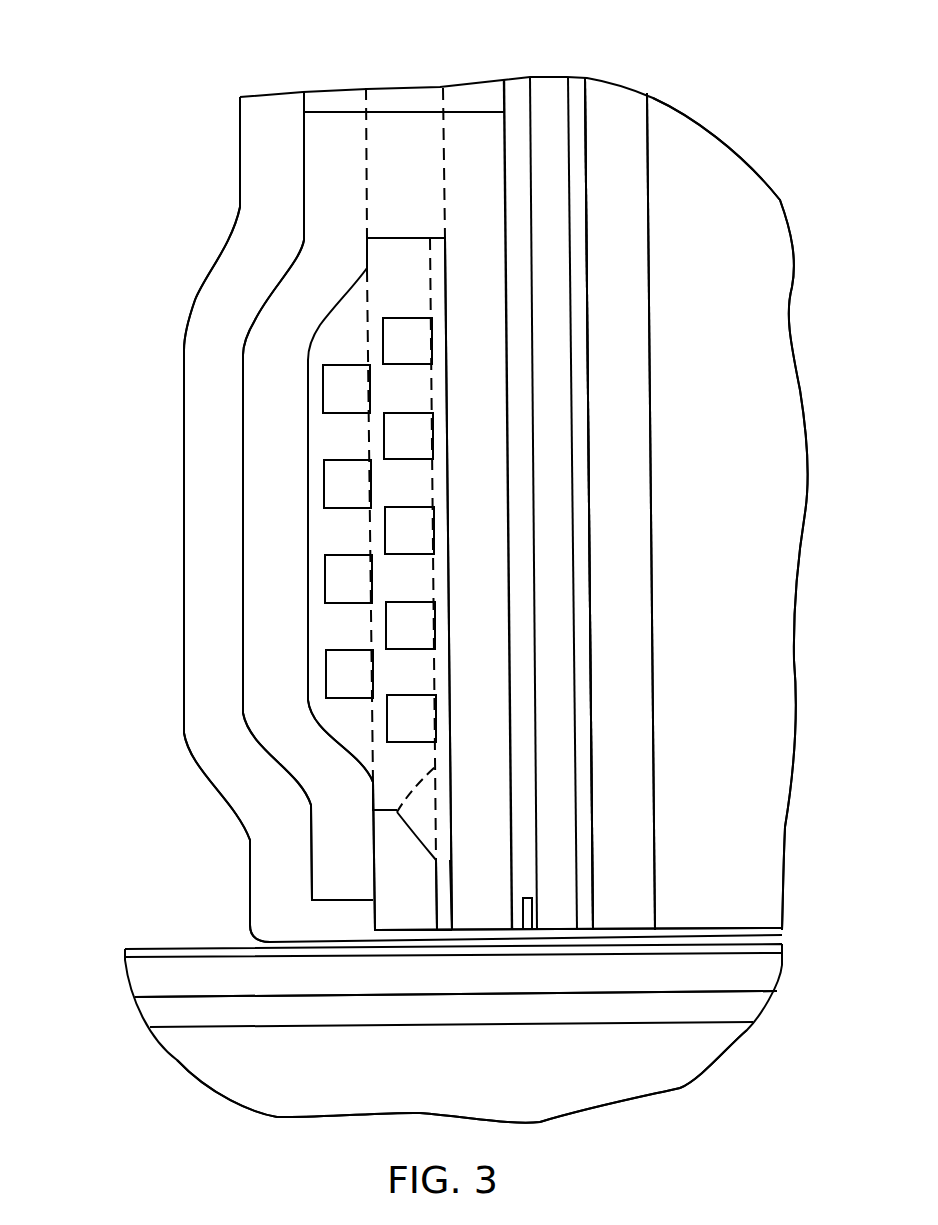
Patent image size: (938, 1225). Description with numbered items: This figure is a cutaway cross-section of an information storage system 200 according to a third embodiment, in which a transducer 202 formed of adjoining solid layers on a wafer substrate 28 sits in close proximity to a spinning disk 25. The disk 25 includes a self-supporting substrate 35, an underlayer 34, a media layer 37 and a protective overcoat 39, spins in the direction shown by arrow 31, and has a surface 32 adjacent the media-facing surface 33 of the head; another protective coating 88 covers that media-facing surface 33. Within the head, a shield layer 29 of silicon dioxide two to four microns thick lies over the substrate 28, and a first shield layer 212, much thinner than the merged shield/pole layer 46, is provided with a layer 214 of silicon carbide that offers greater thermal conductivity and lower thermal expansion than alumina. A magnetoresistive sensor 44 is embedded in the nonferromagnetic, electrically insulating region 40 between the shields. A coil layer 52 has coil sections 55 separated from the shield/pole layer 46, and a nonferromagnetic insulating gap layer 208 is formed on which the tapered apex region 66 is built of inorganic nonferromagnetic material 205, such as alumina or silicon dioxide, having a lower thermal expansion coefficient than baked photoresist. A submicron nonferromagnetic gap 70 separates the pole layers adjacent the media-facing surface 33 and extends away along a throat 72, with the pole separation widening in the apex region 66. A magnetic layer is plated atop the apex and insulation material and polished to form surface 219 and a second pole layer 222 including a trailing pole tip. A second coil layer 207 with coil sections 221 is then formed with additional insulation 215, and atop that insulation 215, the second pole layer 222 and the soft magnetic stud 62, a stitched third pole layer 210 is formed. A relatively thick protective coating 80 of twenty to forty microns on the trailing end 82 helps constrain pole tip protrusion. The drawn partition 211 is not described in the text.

The information storage system 200 is at (104, 66).
The transducer 202 is at (120, 573).
The trailing end 82 is at (181, 383).
The protective coating 80 is at (227, 474).
The third pole layer 210 is at (298, 693).
The second coil layer 207 is at (345, 340).
The additional insulation 215 is at (363, 636).
The soft magnetic stud 62 is at (411, 187).
The merged shield/pole layer 46 is at (493, 594).
The coil layer 52 is at (407, 306).
The coil sections 55 is at (432, 342).
The coil sections 221 is at (323, 500).
The surface 219 is at (362, 440).
The partition 211 is at (408, 483).
The nonferromagnetic insulating gap layer 208 is at (442, 655).
The inorganic nonferromagnetic material 205 is at (437, 813).
The apex region 66 is at (416, 856).
The throat 72 is at (453, 860).
The second pole layer 222 is at (377, 916).
The region of nonferromagnetic insulating layers 40 is at (530, 787).
The first shield layer 212 is at (553, 316).
The shield layer 29 is at (634, 539).
The silicon carbide layer 214 is at (588, 662).
The wafer substrate 28 is at (759, 457).
The magnetoresistive sensor 44 is at (528, 913).
The protective coating 88 is at (625, 928).
The nonferromagnetic gap 70 is at (448, 944).
The media-facing surface 33 is at (329, 946).
The disk surface 32 is at (157, 945).
The disk 25 is at (105, 1025).
The media layer 37 is at (392, 985).
The protective overcoat 39 is at (685, 955).
The underlayer 34 is at (595, 1013).
The self-supporting substrate 35 is at (469, 1097).
The arrow 31 is at (332, 1070).